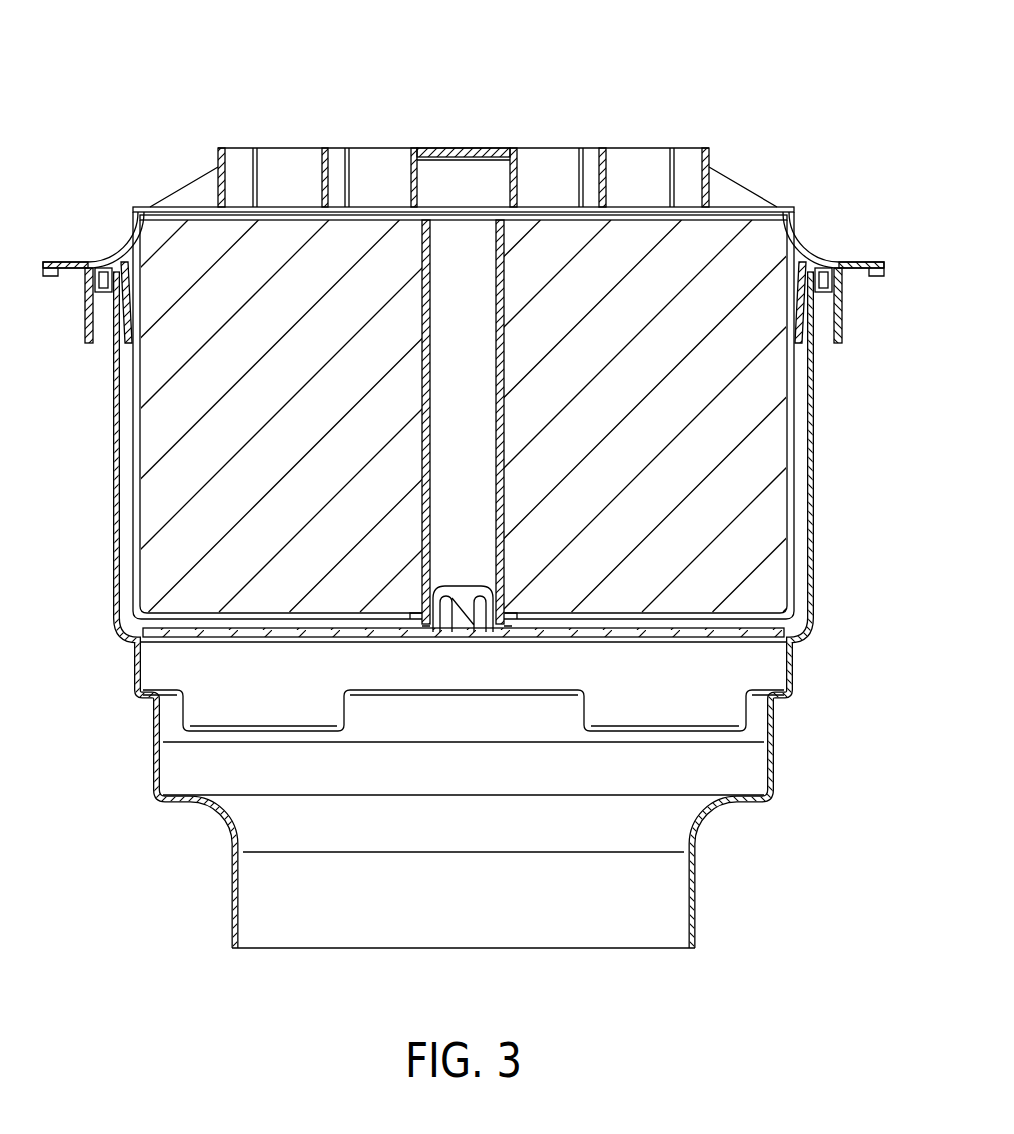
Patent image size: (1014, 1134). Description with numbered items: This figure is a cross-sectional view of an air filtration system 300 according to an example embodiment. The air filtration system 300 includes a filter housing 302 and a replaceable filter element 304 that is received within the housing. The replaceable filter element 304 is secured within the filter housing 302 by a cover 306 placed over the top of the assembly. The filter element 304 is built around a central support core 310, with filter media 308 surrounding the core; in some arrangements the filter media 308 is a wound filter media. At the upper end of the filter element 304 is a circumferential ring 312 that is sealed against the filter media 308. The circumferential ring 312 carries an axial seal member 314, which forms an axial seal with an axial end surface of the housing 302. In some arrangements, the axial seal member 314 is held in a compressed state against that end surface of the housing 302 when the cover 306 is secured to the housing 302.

The air filtration system 300 is at (172, 76).
The filter housing 302 is at (814, 493).
The replaceable filter element 304 is at (793, 414).
The cover 306 is at (641, 166).
The filter media 308 is at (682, 438).
The central support core 310 is at (469, 401).
The circumferential ring 312 is at (128, 308).
The axial seal member 314 is at (112, 272).